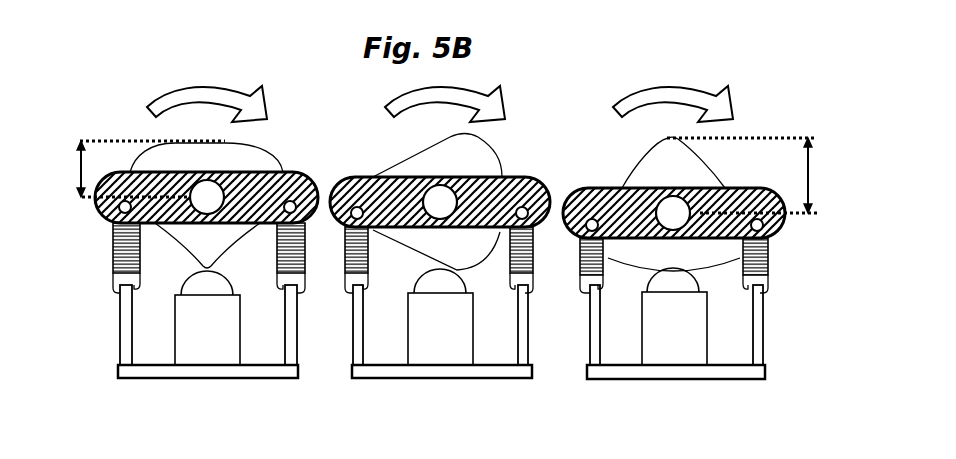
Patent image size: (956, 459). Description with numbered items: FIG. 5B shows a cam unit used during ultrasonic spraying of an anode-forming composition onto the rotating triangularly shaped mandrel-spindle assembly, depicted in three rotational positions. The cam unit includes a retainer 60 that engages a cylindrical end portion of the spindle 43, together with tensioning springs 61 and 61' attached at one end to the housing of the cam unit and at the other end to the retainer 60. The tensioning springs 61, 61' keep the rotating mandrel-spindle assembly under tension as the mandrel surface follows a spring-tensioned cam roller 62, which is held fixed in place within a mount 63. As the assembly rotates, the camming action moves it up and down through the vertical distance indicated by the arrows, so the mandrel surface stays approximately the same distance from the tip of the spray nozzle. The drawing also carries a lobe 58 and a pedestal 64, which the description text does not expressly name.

The pivot shaft 43 is at (207, 187).
The cam 58 is at (248, 162).
The cam plate 60 is at (96, 205).
The threaded post 61 is at (100, 284).
The threaded post 61' is at (307, 272).
The base frame 62 is at (180, 372).
The dome follower 63 is at (205, 282).
The pedestal 64 is at (228, 343).